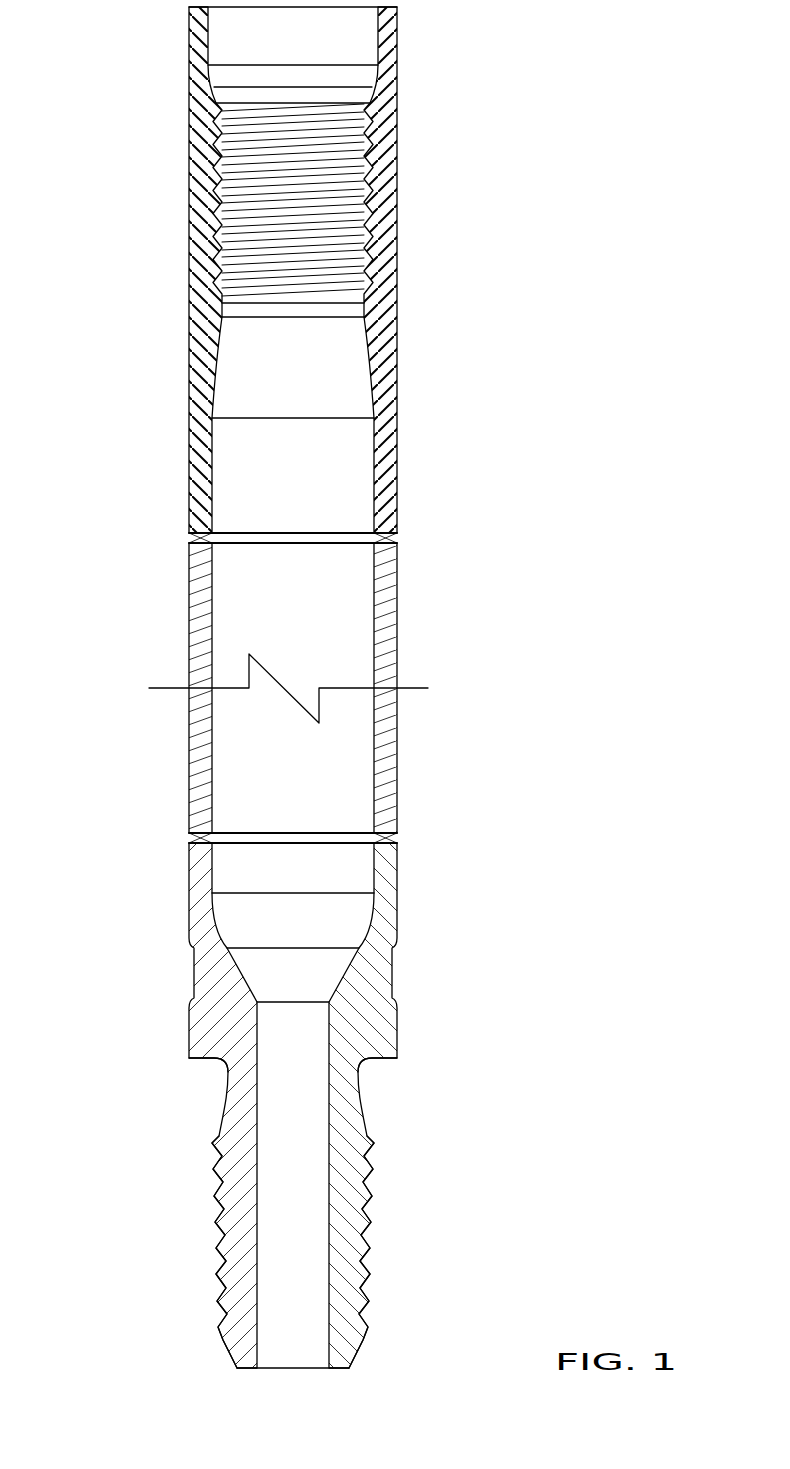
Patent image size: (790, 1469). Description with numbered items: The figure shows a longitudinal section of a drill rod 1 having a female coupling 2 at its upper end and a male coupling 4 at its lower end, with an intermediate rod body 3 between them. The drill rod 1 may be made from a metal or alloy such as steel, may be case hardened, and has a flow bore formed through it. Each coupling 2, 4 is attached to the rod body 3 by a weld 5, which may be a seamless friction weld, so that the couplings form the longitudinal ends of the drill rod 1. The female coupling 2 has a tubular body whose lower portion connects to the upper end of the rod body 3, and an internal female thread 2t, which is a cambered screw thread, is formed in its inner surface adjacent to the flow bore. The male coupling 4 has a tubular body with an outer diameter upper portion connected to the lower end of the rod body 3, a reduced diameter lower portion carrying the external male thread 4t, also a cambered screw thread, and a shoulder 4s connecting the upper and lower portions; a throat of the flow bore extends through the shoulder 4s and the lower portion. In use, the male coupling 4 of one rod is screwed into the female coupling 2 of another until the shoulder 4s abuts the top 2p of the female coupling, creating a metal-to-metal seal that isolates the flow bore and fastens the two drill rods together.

The drill rod 1 is at (112, 43).
The female coupling 2 is at (302, 269).
The top of the female coupling 2p is at (395, 5).
The internal female thread 2t is at (373, 228).
The rod body 3 is at (188, 612).
The male coupling 4 is at (283, 1100).
The shoulder 4s is at (388, 1060).
The external male thread 4t is at (373, 1200).
The weld 5 is at (400, 538).